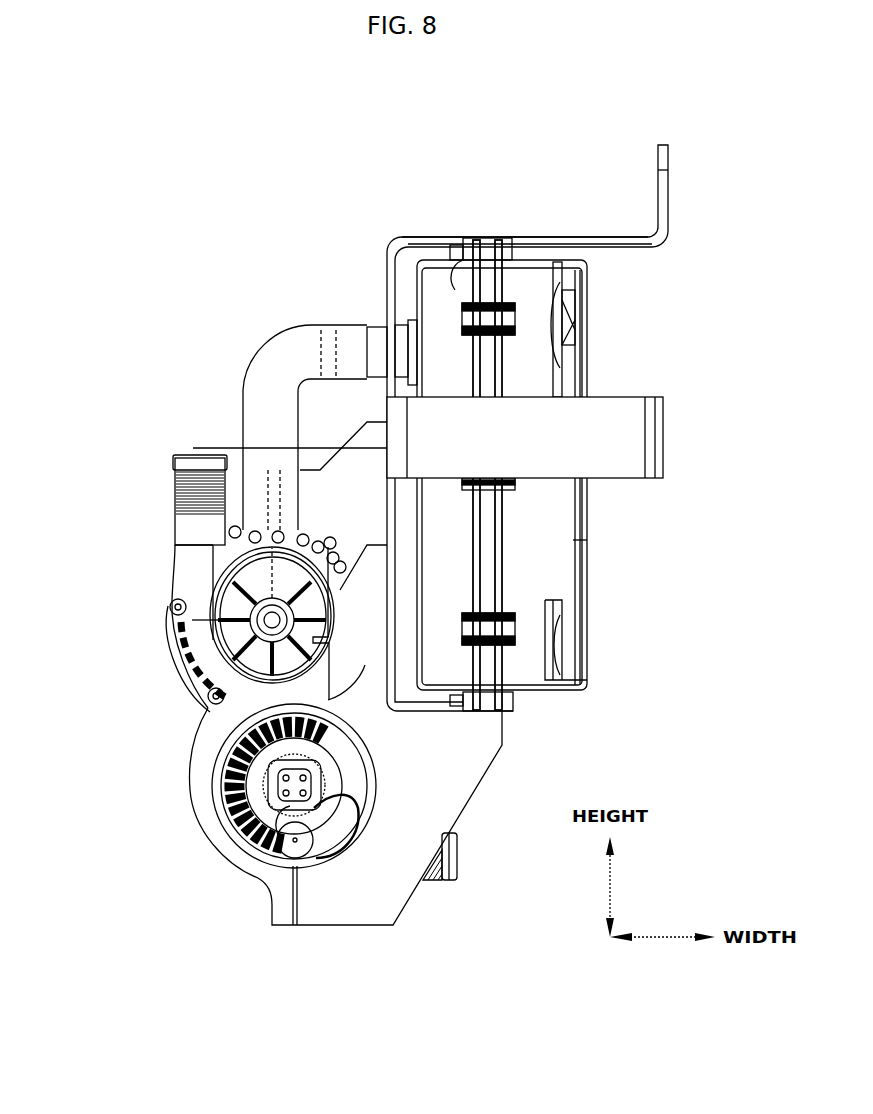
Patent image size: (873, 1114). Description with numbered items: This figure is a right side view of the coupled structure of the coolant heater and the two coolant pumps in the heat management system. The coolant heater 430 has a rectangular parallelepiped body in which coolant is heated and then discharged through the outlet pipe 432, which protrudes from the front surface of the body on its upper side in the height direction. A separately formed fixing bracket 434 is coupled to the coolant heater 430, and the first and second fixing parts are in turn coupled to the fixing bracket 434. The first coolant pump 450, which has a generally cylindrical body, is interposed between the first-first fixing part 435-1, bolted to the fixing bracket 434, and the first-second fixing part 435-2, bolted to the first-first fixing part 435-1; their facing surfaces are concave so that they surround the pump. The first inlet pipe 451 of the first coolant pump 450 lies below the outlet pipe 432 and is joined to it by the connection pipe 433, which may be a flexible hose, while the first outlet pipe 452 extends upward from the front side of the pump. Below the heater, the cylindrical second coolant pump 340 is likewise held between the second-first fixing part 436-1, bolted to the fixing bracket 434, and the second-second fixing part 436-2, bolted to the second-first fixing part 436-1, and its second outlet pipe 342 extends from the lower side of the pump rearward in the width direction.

The second coolant pump 340 is at (213, 790).
The second outlet pipe 342 is at (458, 855).
The coolant heater 430 is at (587, 317).
The outlet pipe 432 is at (377, 330).
The connection pipe 433 is at (260, 347).
The fixing bracket 434 is at (553, 237).
The 1-1-th fixing part 435-1 is at (345, 442).
The 1-2-th fixing part 435-2 is at (178, 653).
The 2-1-th fixing part 436-1 is at (370, 907).
The 2-2-th fixing part 436-2 is at (273, 927).
The first coolant pump 450 is at (195, 590).
The first inlet pipe 451 is at (197, 572).
The first outlet pipe 452 is at (177, 523).